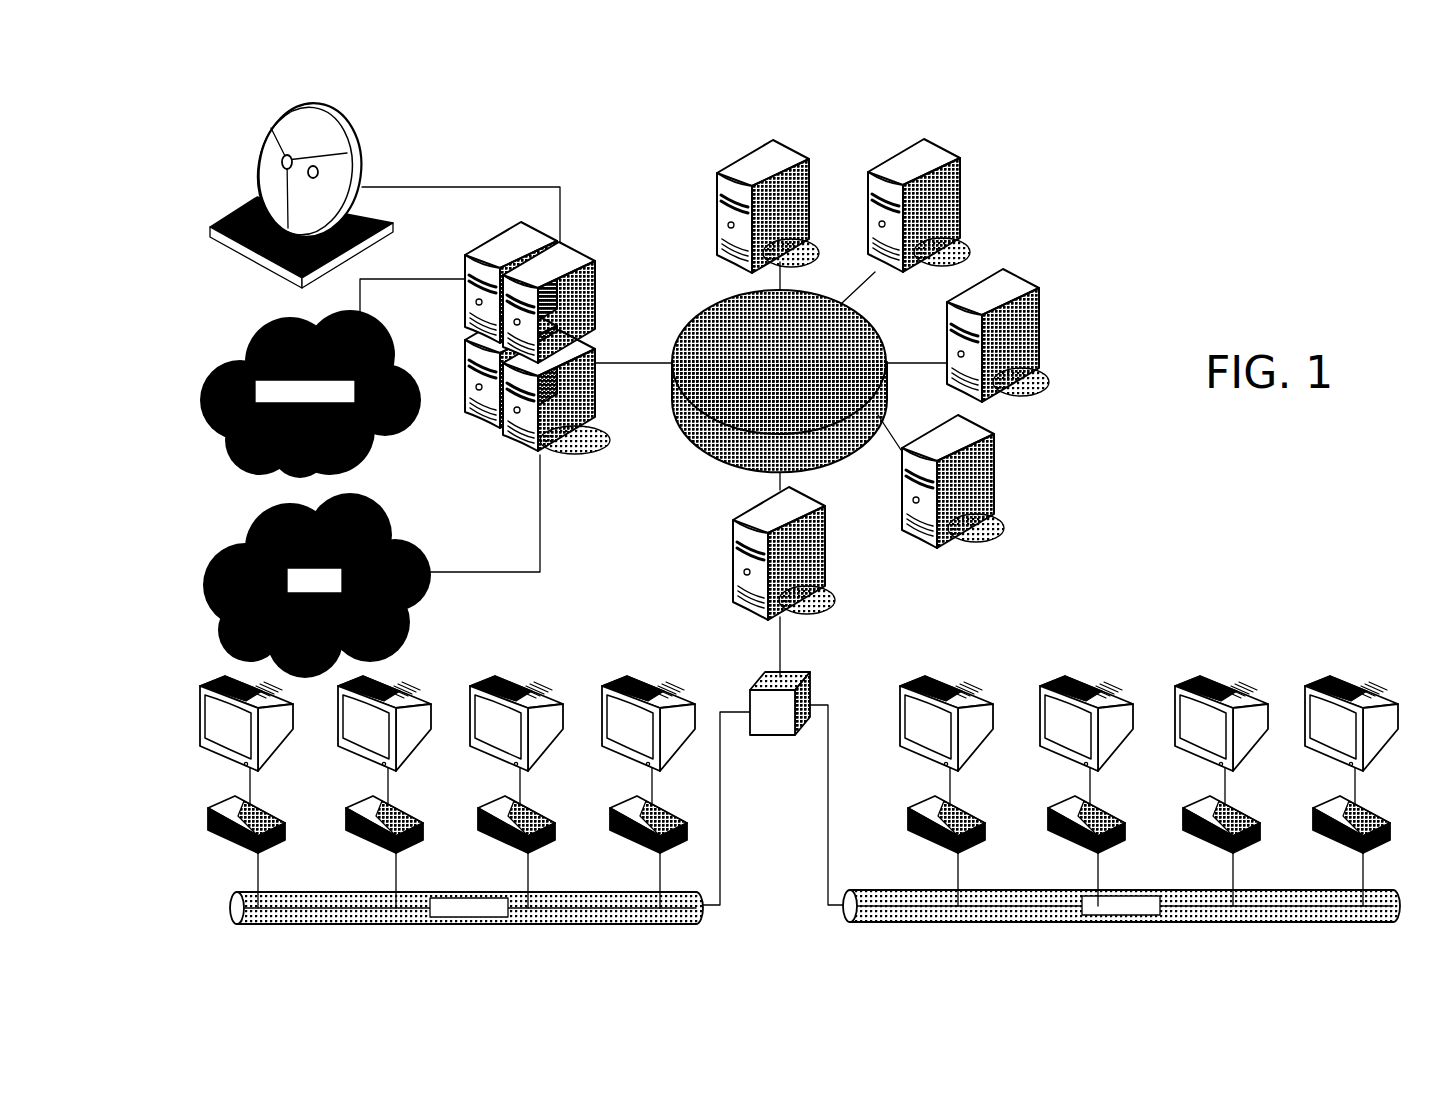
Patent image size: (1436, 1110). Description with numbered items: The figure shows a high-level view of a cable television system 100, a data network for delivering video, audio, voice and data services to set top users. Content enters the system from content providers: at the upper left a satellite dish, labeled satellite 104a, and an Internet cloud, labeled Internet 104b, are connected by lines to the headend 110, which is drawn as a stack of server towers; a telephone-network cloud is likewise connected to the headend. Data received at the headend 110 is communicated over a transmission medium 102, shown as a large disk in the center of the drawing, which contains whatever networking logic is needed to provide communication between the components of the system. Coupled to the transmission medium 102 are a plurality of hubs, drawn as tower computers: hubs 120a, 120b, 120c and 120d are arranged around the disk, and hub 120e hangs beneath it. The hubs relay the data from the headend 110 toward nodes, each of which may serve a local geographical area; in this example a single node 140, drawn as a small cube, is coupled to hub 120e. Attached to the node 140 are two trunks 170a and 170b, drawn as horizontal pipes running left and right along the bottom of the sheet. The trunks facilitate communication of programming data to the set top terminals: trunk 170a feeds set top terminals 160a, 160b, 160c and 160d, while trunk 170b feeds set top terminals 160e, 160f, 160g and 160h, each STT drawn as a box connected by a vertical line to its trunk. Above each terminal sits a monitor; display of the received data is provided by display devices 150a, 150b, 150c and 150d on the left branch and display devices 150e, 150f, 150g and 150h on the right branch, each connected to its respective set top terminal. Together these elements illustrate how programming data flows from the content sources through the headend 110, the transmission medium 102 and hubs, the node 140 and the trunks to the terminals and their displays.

The cable television system 100 is at (1162, 160).
The transmission medium 102 is at (779, 381).
The satellite 104a is at (342, 152).
The Internet 104b is at (390, 433).
The headend 110 is at (578, 250).
The hub 120a is at (790, 150).
The hub 120b is at (963, 160).
The hub 120c is at (1037, 287).
The hub 120d is at (992, 513).
The hub 120e is at (825, 587).
The node 140 is at (808, 675).
The display device 150a is at (252, 678).
The display device 150b is at (408, 760).
The display device 150c is at (540, 760).
The display device 150d is at (652, 678).
The display device 150e is at (900, 745).
The display device 150f is at (1042, 740).
The display device 150g is at (1178, 750).
The display device 150h is at (1308, 750).
The set top terminal 160a is at (268, 853).
The set top terminal 160b is at (403, 853).
The set top terminal 160c is at (537, 853).
The set top terminal 160d is at (662, 815).
The set top terminal 160e is at (907, 817).
The set top terminal 160f is at (1045, 820).
The set top terminal 160g is at (1182, 820).
The set top terminal 160h is at (1312, 820).
The trunk 170a is at (707, 917).
The trunk 170b is at (842, 912).